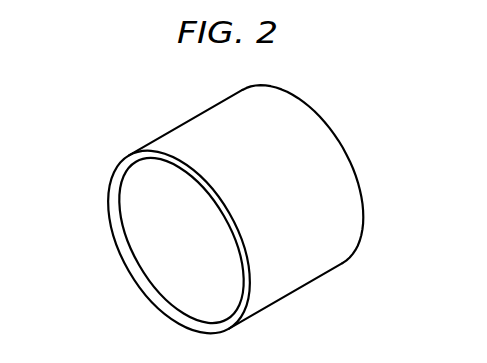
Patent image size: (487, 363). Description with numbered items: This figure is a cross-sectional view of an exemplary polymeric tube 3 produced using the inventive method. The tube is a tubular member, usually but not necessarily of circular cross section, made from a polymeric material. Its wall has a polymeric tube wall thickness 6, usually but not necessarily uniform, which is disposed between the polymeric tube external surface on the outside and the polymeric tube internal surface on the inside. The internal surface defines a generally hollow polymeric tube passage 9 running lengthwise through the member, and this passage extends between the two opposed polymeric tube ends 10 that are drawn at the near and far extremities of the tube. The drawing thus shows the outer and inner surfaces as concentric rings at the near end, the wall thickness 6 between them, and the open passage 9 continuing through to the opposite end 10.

The sleeve 3 is at (250, 200).
The polymeric tube wall thickness 6 is at (200, 240).
The polymeric tube passage 9 is at (191, 281).
The polymeric tube ends 10 is at (117, 181).